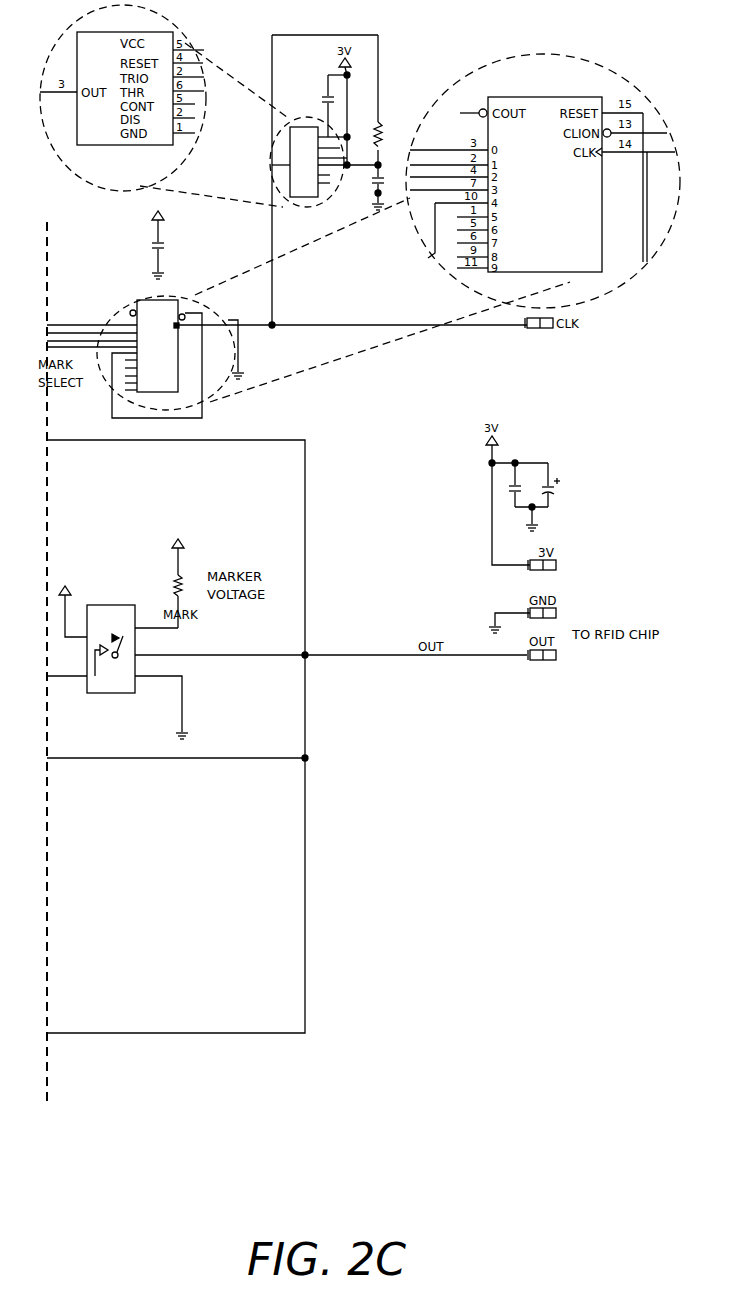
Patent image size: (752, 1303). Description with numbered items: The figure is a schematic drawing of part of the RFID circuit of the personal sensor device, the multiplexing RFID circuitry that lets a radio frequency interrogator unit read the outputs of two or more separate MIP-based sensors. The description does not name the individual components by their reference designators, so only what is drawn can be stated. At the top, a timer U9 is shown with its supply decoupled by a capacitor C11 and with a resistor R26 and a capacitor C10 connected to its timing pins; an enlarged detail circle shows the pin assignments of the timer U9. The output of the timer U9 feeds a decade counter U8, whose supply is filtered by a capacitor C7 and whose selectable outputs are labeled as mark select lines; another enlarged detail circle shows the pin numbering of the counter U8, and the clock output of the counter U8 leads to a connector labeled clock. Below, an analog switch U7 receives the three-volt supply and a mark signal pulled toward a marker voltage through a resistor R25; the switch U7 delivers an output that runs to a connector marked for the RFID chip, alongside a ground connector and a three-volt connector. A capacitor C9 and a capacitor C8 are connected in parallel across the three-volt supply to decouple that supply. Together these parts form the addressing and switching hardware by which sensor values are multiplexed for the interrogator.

The MAX4514 analog switch U7 is at (287, 654).
The 4017AK decade counter U8 is at (287, 349).
The ICM755 timer U9 is at (324, 174).
The capacitor .01uF C7 is at (162, 237).
The capacitor 4.7uF C8 is at (565, 485).
The capacitor .01uF C9 is at (522, 497).
The capacitor C10 is at (379, 187).
The capacitor .01uF C11 is at (328, 106).
The resistor 10K ohm R25 is at (183, 583).
The resistor R26 is at (383, 145).